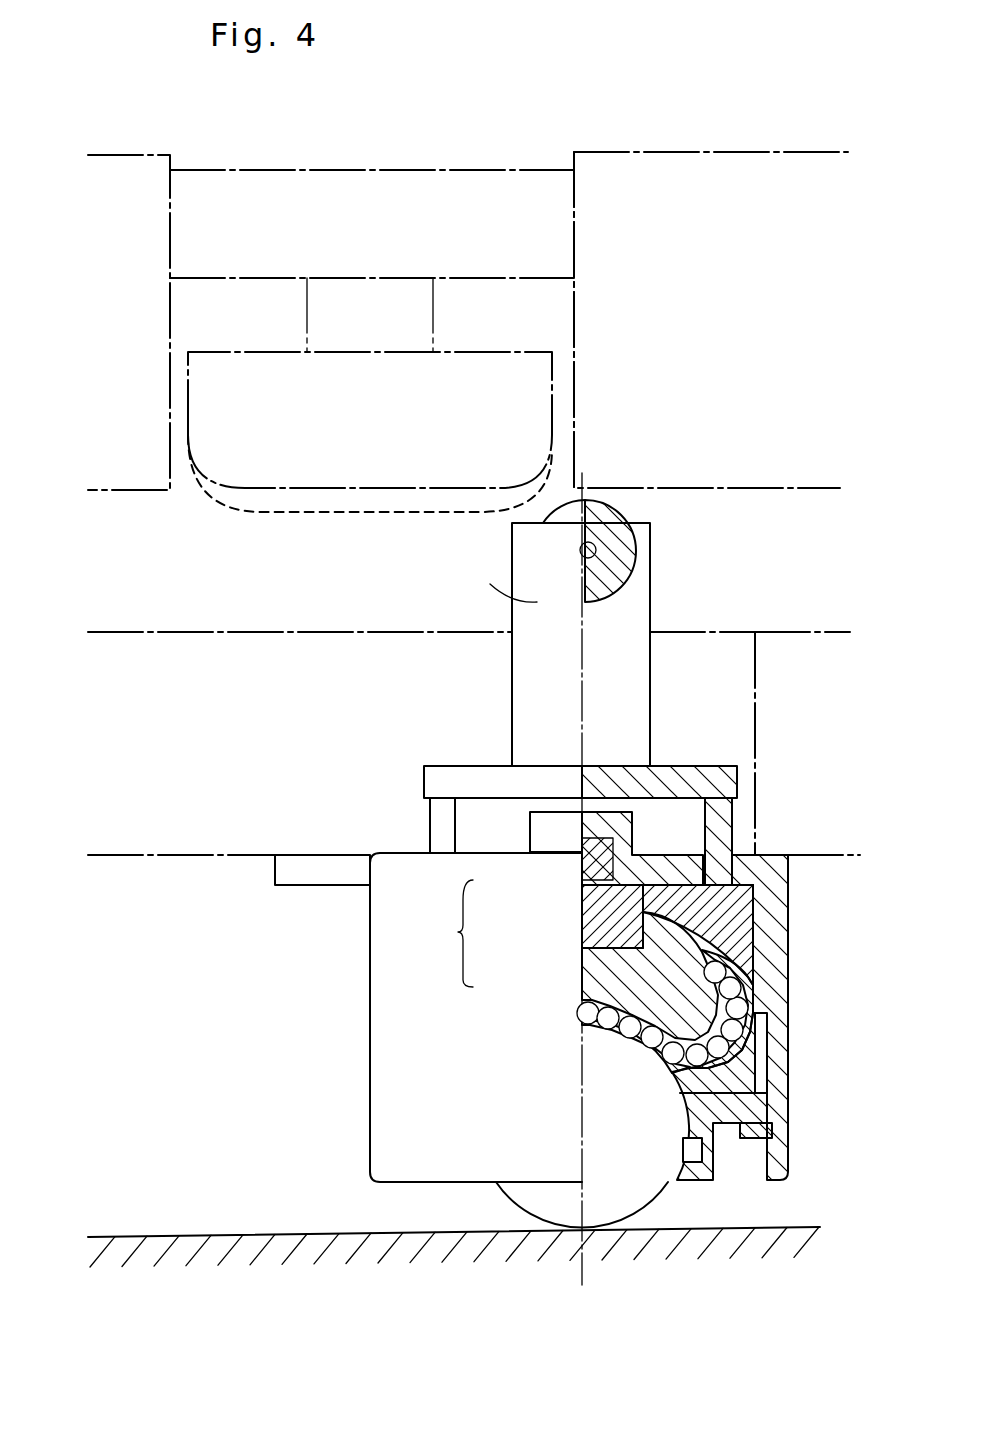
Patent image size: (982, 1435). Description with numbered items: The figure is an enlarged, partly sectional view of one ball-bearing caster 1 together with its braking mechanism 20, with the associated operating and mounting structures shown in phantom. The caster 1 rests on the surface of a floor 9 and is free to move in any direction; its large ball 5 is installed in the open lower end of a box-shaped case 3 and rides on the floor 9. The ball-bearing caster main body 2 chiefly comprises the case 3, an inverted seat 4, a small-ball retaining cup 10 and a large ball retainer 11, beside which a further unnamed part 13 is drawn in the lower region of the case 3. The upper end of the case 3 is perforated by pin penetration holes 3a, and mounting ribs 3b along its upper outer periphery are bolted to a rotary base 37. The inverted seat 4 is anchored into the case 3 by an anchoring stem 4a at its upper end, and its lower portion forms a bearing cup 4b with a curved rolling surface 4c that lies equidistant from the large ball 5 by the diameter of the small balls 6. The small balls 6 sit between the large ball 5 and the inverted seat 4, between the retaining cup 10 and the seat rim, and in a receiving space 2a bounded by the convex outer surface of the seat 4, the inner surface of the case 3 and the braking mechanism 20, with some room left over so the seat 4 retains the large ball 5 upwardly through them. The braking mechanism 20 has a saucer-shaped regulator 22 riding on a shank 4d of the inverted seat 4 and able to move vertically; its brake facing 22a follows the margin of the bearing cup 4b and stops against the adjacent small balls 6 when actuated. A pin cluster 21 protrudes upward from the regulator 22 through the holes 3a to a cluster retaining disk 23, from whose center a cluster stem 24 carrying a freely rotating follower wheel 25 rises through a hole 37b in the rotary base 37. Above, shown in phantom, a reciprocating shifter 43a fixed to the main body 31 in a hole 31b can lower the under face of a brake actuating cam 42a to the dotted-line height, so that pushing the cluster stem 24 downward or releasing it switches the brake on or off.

The ball-bearing caster 1 is at (338, 1021).
The ball-bearing caster main body 2 is at (404, 849).
The receiving space 2a is at (678, 873).
The case 3 is at (765, 1002).
The pin penetration holes 3a is at (722, 850).
The mounting ribs 3b is at (325, 868).
The inverted seat 4 is at (590, 971).
The anchoring stem 4a is at (583, 872).
The bearing cup 4b is at (620, 983).
The rolling surface 4c is at (590, 1013).
The shank 4d is at (596, 912).
The large ball 5 is at (612, 1202).
The small balls 6 is at (620, 1028).
The floor 9 is at (413, 1230).
The small-ball retaining cup 10 is at (747, 1068).
The large ball retainer 11 is at (695, 1170).
The retaining ring 13 is at (750, 1142).
The braking mechanism 20 is at (653, 748).
The pin cluster 21 is at (727, 830).
The regulator 22 is at (753, 915).
The brake facing 22a is at (750, 966).
The cluster retaining disk 23 is at (446, 790).
The cluster stem 24 is at (540, 598).
The follower wheel 25 is at (612, 503).
The main body 31 is at (96, 154).
The holes 31b is at (574, 196).
The rotary base 37 is at (784, 630).
The hole 37b is at (753, 672).
The brake actuating cam 42a is at (243, 493).
The reciprocating shifter 43a is at (362, 190).